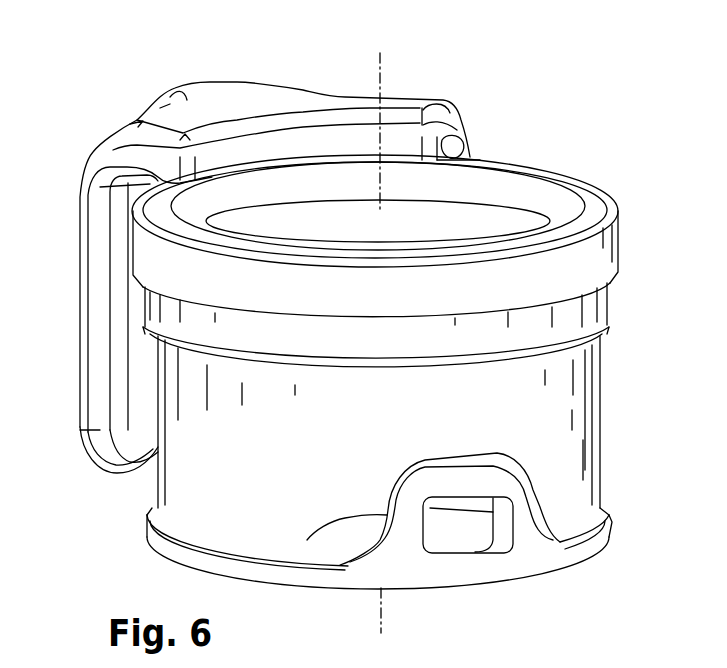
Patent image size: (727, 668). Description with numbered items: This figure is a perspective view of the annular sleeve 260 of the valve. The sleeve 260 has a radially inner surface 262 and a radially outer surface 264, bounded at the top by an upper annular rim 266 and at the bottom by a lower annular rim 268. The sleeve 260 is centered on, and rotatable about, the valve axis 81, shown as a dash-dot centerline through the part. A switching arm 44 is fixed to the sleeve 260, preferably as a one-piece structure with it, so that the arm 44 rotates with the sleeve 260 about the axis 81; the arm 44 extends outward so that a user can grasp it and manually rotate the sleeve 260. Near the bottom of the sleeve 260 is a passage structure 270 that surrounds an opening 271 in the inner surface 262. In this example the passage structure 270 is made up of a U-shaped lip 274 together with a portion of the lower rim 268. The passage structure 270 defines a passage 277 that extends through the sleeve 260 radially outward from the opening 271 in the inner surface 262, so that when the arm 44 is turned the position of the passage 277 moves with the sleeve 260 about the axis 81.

The annular sleeve 260 is at (101, 79).
The switching arm 44 is at (207, 97).
The radially inner surface 262 is at (258, 232).
The valve axis 81 is at (382, 74).
The upper annular rim 266 is at (143, 298).
The radially outer surface 264 is at (192, 488).
The lower annular rim 268 is at (165, 544).
The passage structure 270 is at (535, 466).
The opening 271 is at (469, 524).
The U-shaped lip 274 is at (307, 540).
The passage 277 is at (459, 548).